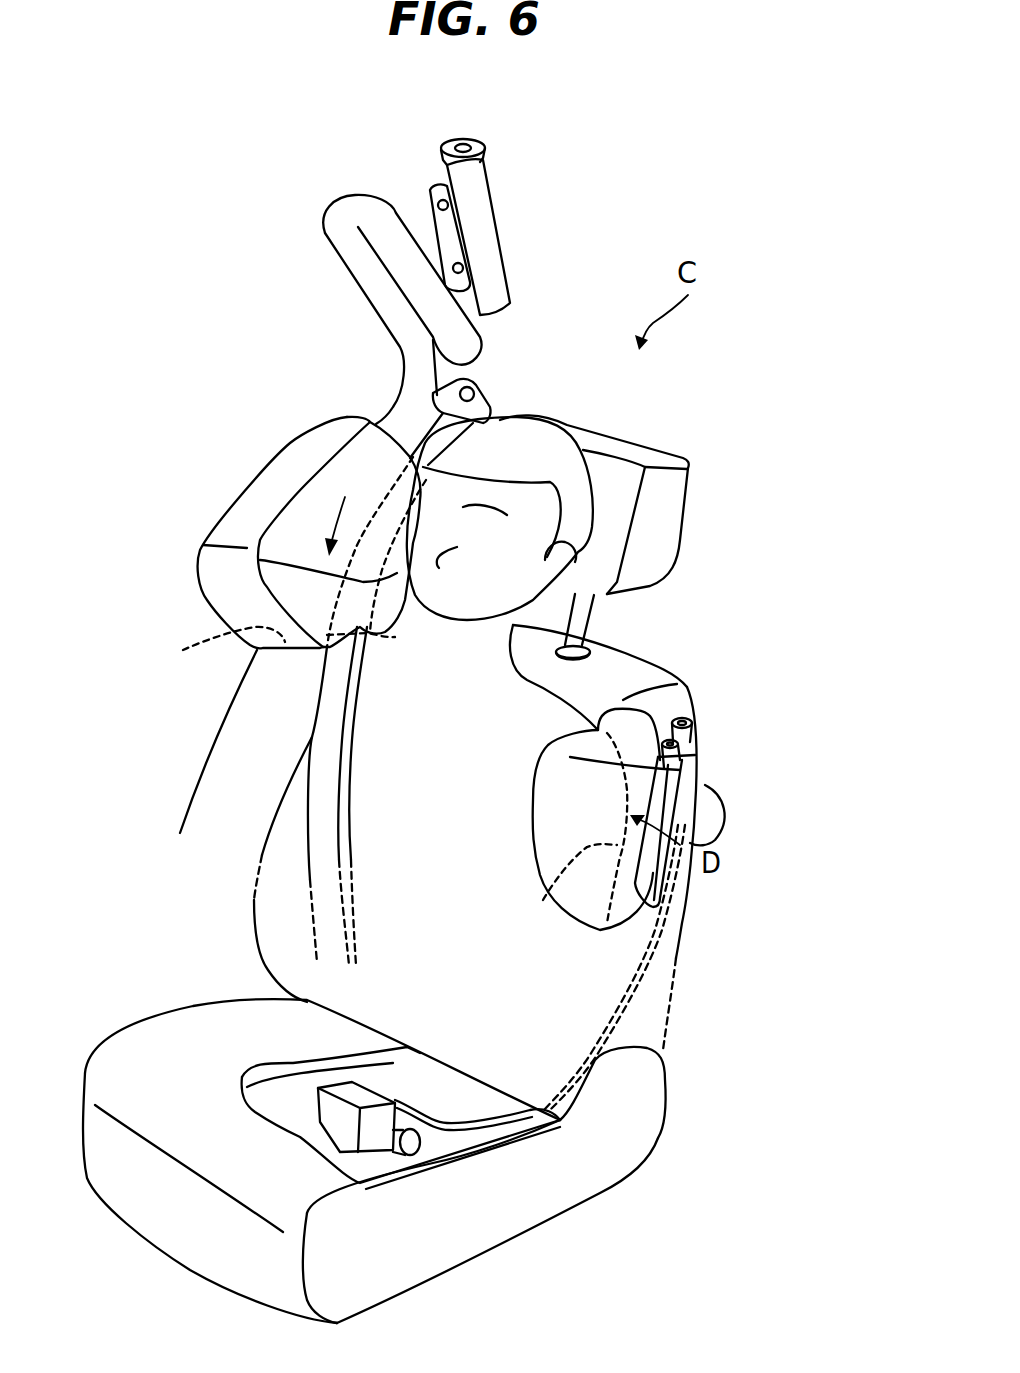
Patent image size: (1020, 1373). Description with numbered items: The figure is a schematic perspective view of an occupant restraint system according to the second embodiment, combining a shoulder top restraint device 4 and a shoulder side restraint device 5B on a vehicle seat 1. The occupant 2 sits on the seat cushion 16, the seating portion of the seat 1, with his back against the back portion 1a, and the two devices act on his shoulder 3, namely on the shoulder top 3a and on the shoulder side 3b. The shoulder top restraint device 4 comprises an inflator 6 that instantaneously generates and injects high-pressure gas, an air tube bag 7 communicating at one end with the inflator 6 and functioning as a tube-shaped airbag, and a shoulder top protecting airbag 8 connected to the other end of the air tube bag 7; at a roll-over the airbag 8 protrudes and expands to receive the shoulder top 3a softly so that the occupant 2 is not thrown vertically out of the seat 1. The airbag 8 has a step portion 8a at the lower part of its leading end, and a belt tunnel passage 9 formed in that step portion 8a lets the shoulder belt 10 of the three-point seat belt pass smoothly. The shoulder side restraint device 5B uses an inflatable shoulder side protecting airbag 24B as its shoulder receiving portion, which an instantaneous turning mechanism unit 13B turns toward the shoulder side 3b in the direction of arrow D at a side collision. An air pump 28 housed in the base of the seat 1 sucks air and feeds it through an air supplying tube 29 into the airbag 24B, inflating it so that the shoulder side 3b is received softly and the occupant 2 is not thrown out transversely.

The seat 1 is at (553, 1204).
The back portion 1a is at (633, 653).
The occupant 2 is at (608, 993).
The side portion of seat back 3 is at (595, 700).
The shoulder top 3a is at (270, 648).
The shoulder side 3b is at (543, 900).
The shoulder top restraint device 4 is at (258, 445).
The shoulder side restraint device 5B is at (695, 798).
The inflator 6 is at (490, 237).
The air tube bag 7 is at (337, 227).
The shoulder top protecting airbag 8 is at (233, 513).
The step portion 8a is at (363, 660).
The belt tunnel passage 9 is at (260, 560).
The shoulder belt 10 is at (317, 780).
The instantaneous turning mechanism unit 13B is at (720, 733).
The seat cushion 16 is at (187, 1040).
The shoulder side protecting airbag 24B is at (550, 797).
The air pump 28 is at (357, 1087).
The air supplying tube 29 is at (665, 930).